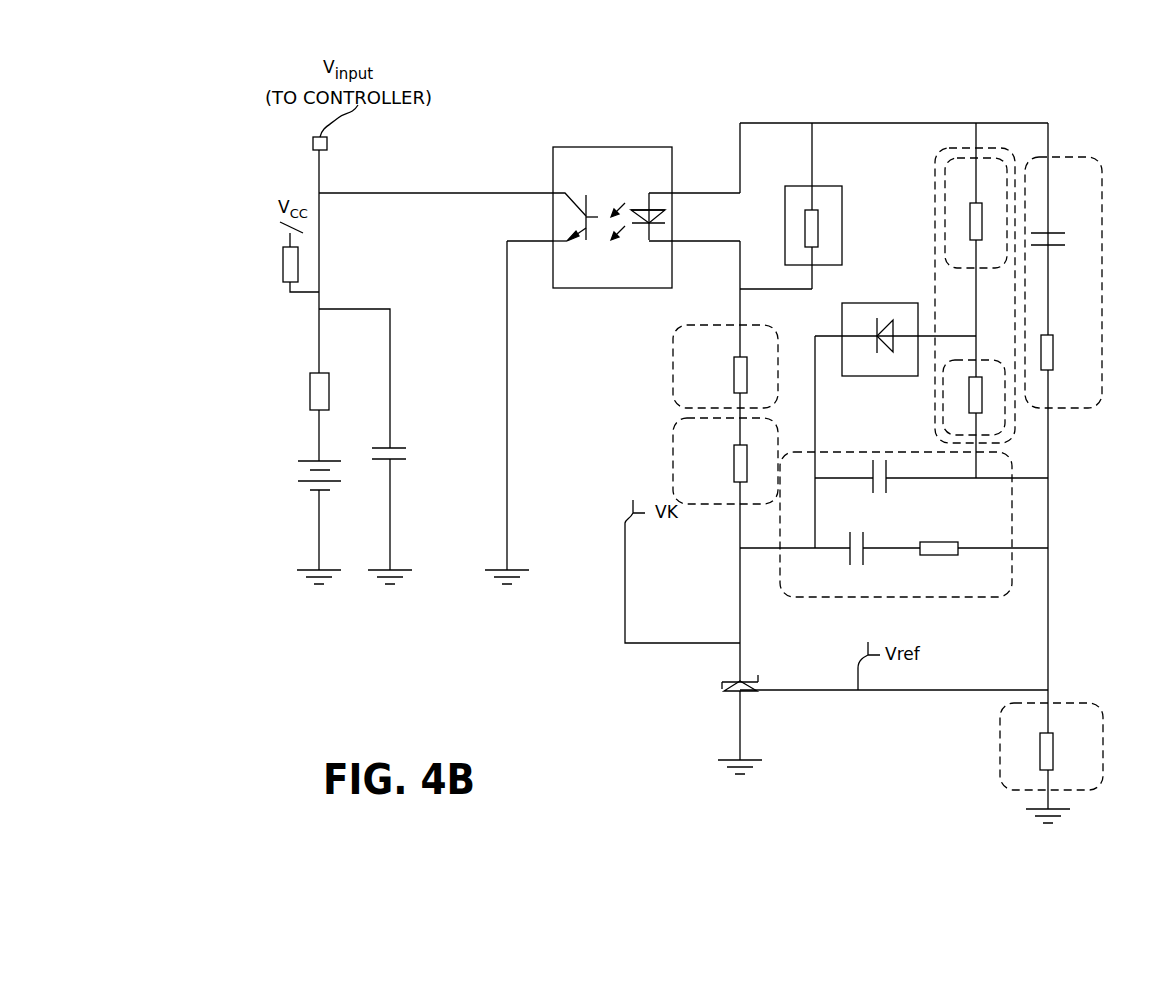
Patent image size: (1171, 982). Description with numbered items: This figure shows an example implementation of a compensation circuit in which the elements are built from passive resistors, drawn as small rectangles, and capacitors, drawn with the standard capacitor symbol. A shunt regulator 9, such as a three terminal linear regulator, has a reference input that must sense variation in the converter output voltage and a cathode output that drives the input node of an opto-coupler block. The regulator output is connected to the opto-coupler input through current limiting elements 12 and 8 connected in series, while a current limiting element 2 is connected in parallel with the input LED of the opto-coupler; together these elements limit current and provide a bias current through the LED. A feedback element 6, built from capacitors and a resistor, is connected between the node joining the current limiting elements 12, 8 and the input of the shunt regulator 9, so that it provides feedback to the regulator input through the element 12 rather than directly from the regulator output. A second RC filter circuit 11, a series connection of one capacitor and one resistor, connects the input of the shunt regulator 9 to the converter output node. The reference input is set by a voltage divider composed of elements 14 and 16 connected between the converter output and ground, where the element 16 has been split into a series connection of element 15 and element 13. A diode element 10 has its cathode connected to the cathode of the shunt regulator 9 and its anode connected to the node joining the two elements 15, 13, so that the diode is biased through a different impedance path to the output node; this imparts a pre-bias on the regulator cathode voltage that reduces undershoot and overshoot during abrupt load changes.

The current limiting element 2 is at (843, 237).
The feedback element 6 is at (979, 597).
The current limiting element 8 is at (675, 378).
The shunt regulator 9 is at (727, 698).
The diode element 10 is at (853, 377).
The second RC filter circuit 11 is at (1103, 225).
The current limiting element 12 is at (675, 460).
The voltage divider element 13 is at (1005, 426).
The voltage divider element 14 is at (1000, 747).
The voltage divider element 15 is at (945, 216).
The voltage divider element 16 is at (995, 148).